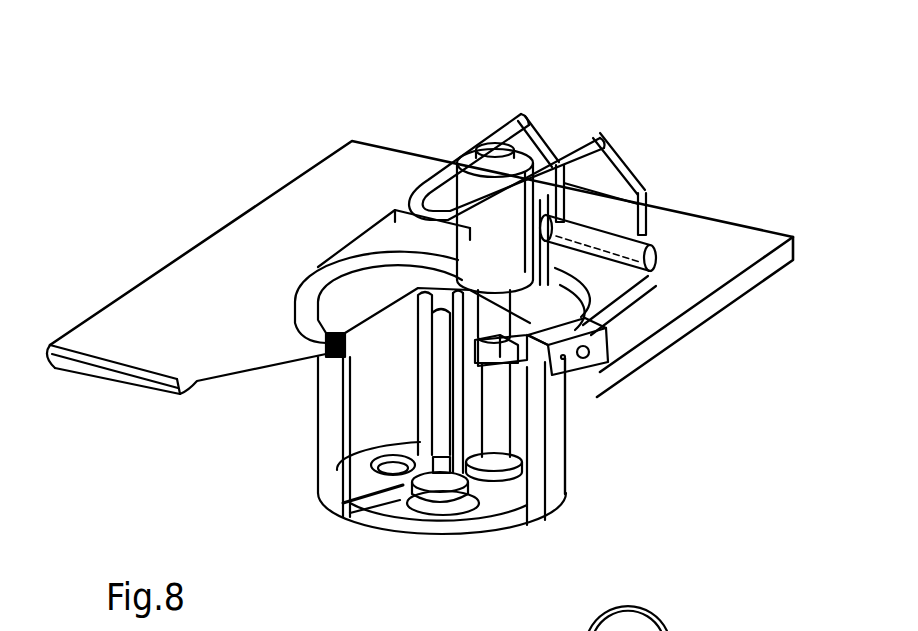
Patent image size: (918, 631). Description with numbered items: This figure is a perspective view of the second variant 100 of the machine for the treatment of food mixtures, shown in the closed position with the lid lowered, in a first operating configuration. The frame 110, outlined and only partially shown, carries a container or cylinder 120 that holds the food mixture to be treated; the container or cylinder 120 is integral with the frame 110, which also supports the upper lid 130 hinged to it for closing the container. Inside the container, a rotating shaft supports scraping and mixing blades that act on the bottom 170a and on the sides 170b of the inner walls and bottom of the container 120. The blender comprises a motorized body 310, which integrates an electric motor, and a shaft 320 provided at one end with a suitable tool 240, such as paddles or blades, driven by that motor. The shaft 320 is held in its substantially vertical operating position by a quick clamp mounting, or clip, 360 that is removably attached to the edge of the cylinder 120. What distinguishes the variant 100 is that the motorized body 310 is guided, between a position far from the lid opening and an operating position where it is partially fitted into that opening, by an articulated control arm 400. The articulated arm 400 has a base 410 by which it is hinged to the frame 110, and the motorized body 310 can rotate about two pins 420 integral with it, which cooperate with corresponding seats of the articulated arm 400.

The second variant of the machine 100 is at (587, 433).
The frame 110 is at (218, 285).
The container or cylinder 120 is at (304, 457).
The upper lid 130 is at (357, 262).
The bottom scraping and mixing blades 170a is at (407, 480).
The side scraping and mixing blades 170b is at (375, 447).
The tool 240 is at (447, 482).
The motorized body 310 is at (453, 197).
The shaft 320 is at (497, 423).
The quick clamp mounting (clip) 360 is at (593, 390).
The articulated control arm 400 is at (497, 113).
The base 410 is at (598, 230).
The pins 420 is at (590, 130).